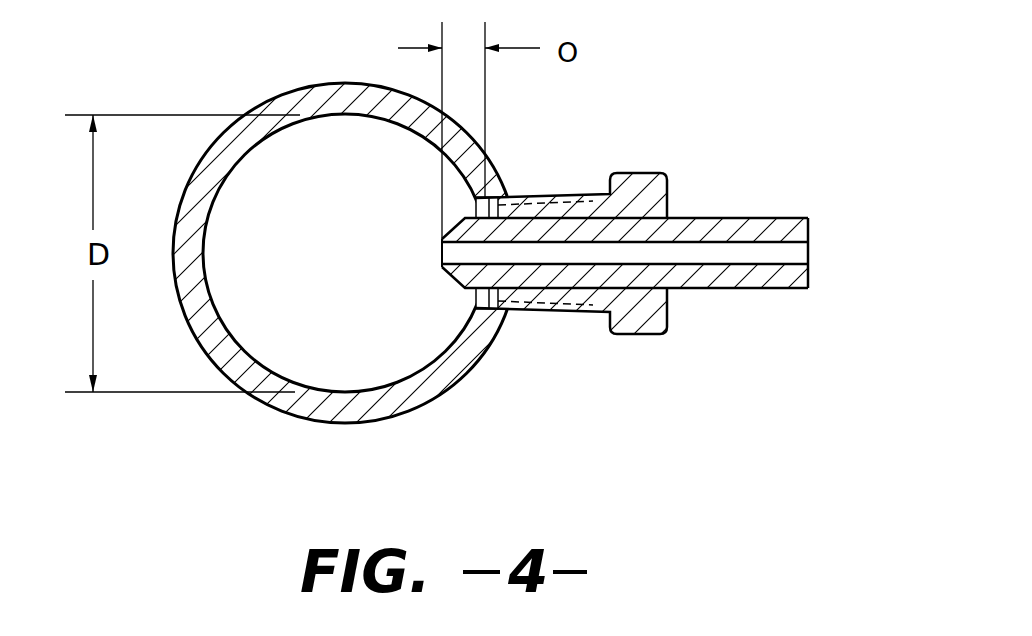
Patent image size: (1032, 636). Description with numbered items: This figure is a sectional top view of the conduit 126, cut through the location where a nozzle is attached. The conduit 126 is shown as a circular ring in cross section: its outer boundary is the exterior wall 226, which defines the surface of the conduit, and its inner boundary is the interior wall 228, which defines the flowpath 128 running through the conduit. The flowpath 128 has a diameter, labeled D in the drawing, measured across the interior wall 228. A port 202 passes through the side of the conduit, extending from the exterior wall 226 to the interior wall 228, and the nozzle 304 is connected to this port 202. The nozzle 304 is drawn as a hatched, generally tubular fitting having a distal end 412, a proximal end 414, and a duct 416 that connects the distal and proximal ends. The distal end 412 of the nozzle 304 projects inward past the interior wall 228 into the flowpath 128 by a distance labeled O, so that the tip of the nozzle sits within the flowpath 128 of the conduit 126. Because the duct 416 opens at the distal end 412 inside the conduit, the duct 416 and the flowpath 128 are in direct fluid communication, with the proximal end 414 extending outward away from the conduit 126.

The conduit 126 is at (298, 82).
The flowpath 128 is at (351, 308).
The port 202 is at (474, 302).
The exterior wall 226 is at (373, 423).
The interior wall 228 is at (360, 392).
The nozzle 304 is at (637, 172).
The distal end 412 is at (440, 254).
The proximal end 414 is at (808, 275).
The duct 416 is at (705, 252).